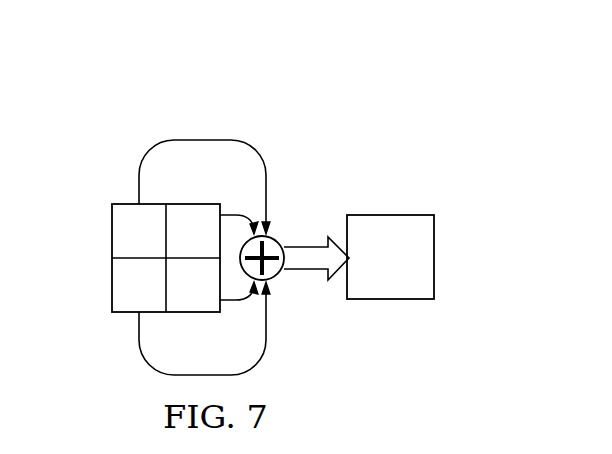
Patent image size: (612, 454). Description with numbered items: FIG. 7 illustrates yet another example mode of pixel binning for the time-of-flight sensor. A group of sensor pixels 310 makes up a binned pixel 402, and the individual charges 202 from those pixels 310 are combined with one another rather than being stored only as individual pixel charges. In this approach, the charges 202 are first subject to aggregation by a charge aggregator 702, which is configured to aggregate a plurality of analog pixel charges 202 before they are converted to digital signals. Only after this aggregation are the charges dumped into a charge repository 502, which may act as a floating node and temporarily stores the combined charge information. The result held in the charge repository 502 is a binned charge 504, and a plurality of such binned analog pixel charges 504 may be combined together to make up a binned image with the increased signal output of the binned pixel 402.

The charges 202 is at (216, 138).
The pixels 310 is at (119, 226).
The binned pixel 402 is at (352, 115).
The charge repository 502 is at (434, 268).
The binned charge 504 is at (424, 244).
The charge aggregator 702 is at (273, 276).